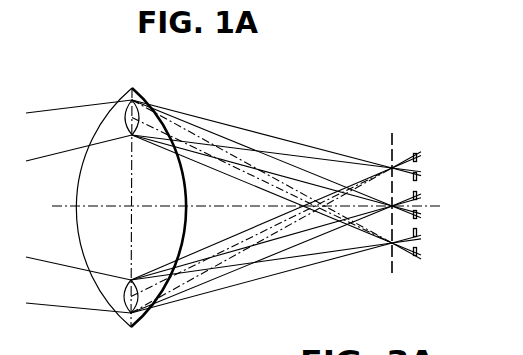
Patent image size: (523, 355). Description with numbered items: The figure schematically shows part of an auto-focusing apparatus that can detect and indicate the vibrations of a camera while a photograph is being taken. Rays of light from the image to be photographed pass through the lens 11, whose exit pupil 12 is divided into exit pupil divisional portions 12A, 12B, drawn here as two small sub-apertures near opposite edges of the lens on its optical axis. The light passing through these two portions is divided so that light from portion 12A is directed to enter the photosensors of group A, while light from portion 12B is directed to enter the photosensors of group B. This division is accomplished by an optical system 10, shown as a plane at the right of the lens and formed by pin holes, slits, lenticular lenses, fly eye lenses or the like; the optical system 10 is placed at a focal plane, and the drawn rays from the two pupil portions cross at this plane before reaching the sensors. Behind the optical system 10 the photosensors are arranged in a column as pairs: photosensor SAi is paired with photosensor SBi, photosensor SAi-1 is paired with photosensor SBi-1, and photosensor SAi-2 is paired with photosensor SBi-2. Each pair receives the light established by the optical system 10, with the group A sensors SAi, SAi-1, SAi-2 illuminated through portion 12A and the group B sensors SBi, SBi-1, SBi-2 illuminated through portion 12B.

The optical system 10 is at (389, 263).
The lens 11 is at (98, 295).
The exit pupil 12 is at (133, 224).
The exit pupil divisional portion 12A is at (138, 313).
The exit pupil divisional portion 12B is at (128, 100).
The photosensor SAi is at (417, 153).
The photosensor SBi is at (418, 172).
The photosensor SAi-1 is at (420, 196).
The photosensor SBi-1 is at (420, 216).
The photosensor SAi-2 is at (421, 236).
The photosensor SBi-2 is at (419, 256).